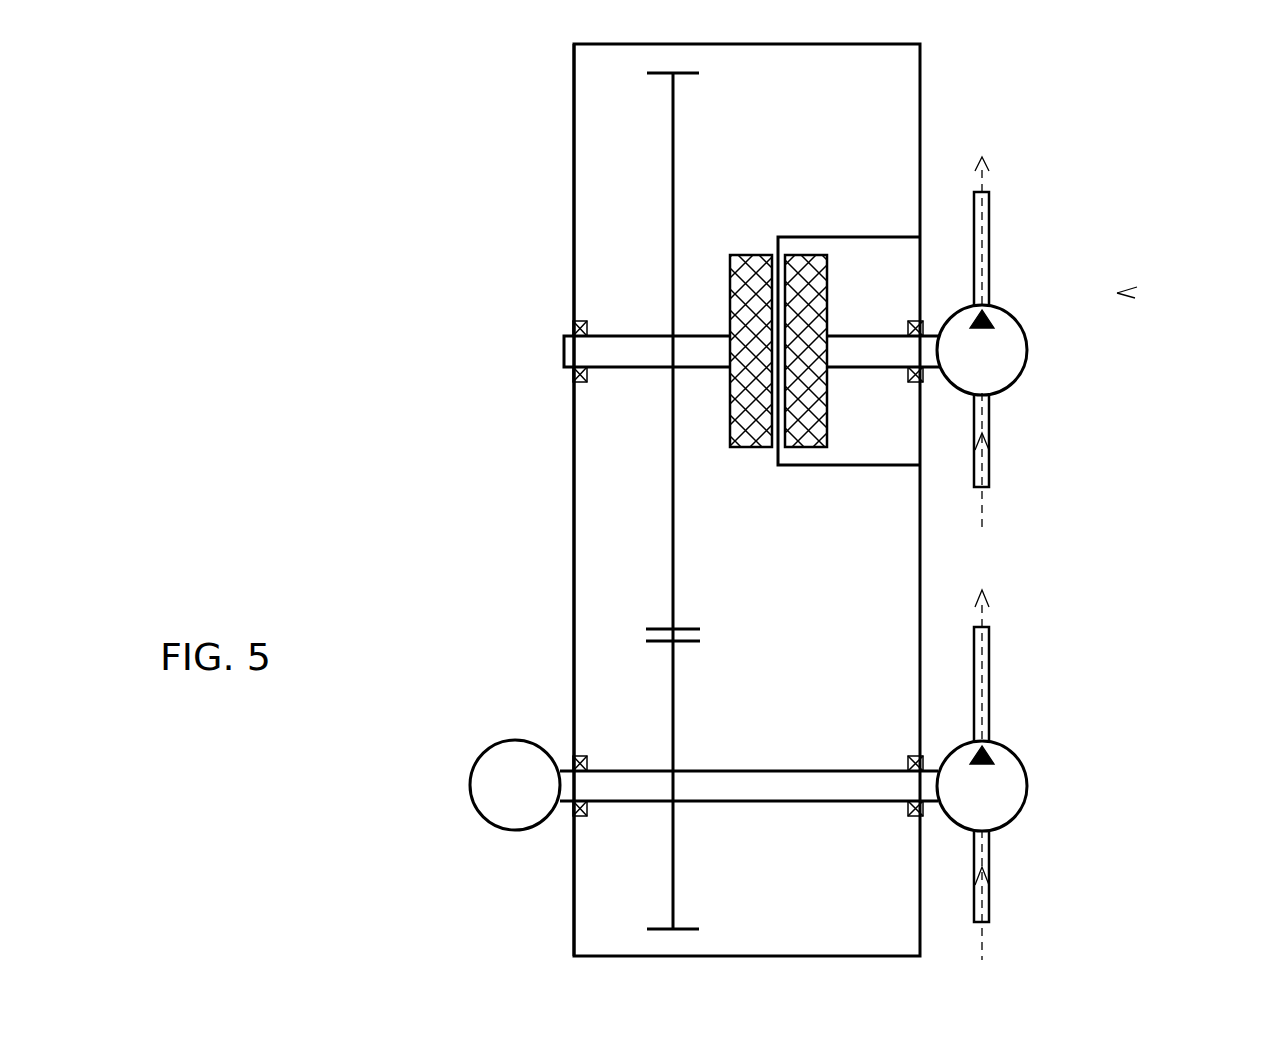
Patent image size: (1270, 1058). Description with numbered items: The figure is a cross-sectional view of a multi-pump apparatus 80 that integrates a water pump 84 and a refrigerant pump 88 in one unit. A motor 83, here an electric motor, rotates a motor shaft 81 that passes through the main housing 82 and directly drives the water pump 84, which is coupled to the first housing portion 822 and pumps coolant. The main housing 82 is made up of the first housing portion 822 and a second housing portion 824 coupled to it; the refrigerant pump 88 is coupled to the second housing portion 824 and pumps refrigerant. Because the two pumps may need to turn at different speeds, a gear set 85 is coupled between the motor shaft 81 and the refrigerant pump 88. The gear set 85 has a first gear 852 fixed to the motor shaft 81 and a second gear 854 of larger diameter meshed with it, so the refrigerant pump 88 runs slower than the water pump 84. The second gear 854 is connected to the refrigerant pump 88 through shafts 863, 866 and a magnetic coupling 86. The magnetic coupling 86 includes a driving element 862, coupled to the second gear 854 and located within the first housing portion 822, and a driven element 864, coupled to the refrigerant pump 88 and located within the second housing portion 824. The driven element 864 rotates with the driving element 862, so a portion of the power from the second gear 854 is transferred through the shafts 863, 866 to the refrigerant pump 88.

The multi-pump apparatus 80 is at (1117, 293).
The motor shaft 81 is at (752, 790).
The main housing 82 is at (958, 559).
The first housing portion 822 is at (574, 572).
The second housing portion 824 is at (863, 230).
The motor 83 is at (488, 747).
The water pump 84 is at (992, 798).
The gear set 85 is at (736, 501).
The first gear 852 is at (673, 868).
The second gear 854 is at (673, 573).
The magnetic coupling 86 is at (794, 349).
The driving element 862 is at (740, 440).
The shaft 863 is at (630, 345).
The driven element 864 is at (838, 348).
The shaft 866 is at (862, 348).
The refrigerant pump 88 is at (1007, 335).